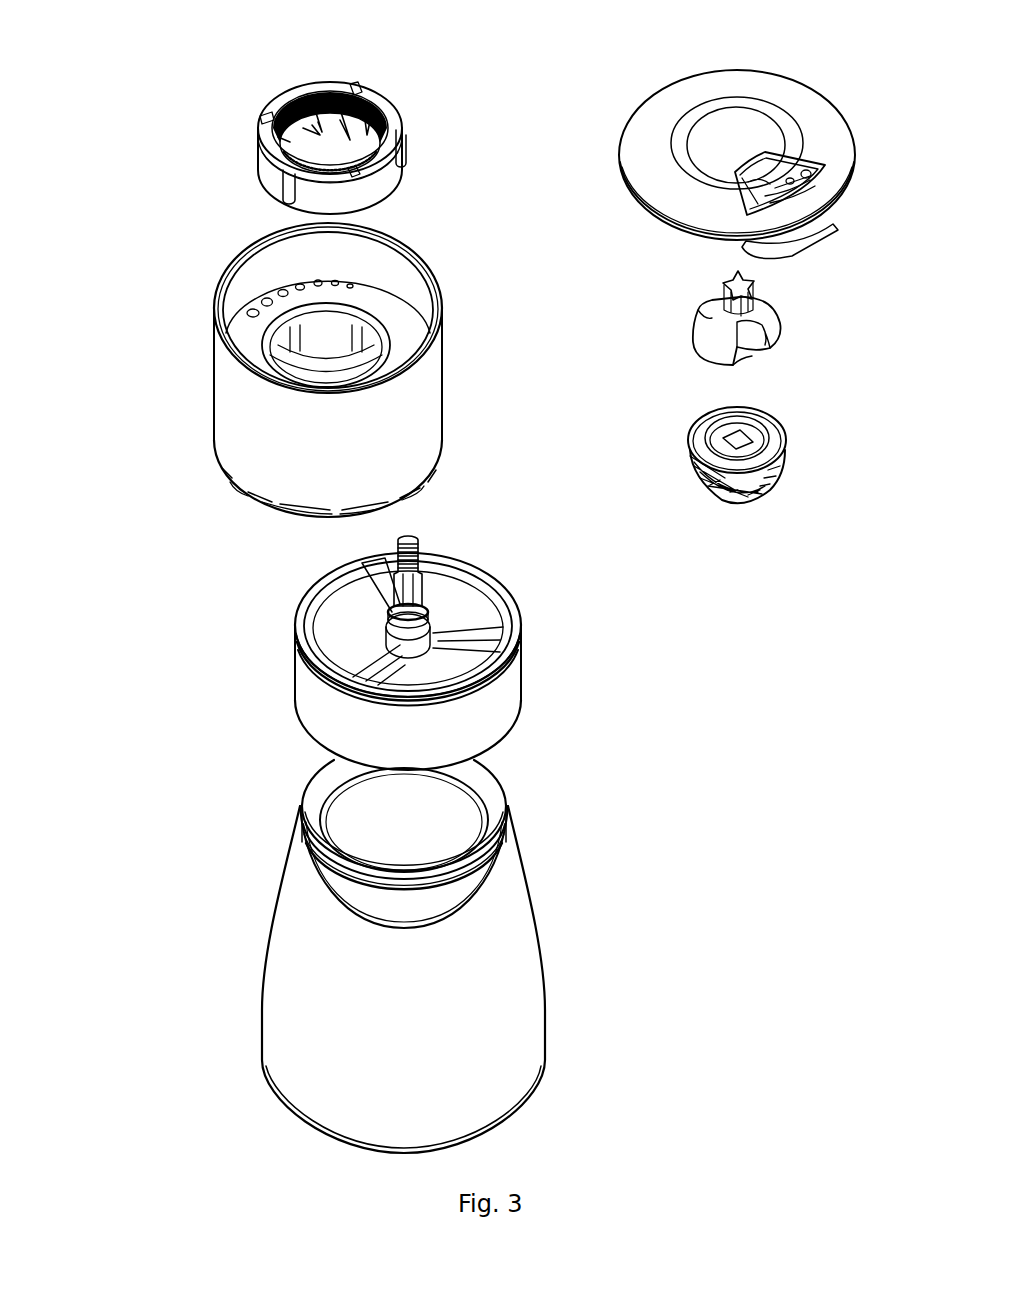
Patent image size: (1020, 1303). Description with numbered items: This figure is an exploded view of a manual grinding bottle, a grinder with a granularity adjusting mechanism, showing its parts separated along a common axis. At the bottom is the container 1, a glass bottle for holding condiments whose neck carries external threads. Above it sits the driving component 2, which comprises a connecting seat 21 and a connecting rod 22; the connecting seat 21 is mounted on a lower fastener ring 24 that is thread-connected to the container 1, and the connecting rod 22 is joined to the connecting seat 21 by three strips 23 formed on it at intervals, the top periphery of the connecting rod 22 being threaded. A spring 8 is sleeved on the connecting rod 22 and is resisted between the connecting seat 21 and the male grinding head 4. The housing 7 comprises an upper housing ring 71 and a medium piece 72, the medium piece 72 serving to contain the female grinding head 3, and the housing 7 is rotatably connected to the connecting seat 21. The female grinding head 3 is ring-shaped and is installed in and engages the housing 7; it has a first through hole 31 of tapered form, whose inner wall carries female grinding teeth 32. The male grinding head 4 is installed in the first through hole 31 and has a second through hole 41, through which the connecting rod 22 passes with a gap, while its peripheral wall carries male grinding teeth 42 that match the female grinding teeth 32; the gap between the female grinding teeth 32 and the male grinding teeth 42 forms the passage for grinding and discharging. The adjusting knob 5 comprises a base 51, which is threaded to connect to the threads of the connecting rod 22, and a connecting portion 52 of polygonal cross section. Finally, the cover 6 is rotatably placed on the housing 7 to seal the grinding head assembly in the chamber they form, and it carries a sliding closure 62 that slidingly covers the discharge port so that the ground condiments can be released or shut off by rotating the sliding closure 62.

The container 1 is at (502, 992).
The driving component 2 is at (425, 634).
The connecting seat 21 is at (523, 632).
The connecting rod 22 is at (408, 583).
The strips 23 is at (472, 640).
The lower fastener ring 24 is at (507, 699).
The female grinding head 3 is at (259, 107).
The first through hole 31 is at (333, 143).
The female grinding teeth 32 is at (295, 100).
The male grinding head 4 is at (787, 447).
The second through hole 41 is at (736, 445).
The male grinding teeth 42 is at (763, 473).
The adjusting knob 5 is at (735, 315).
The base 51 is at (767, 330).
The connecting portion 52 is at (755, 293).
The cover 6 is at (717, 164).
The sliding closure 62 is at (800, 157).
The housing 7 is at (236, 370).
The upper housing ring 71 is at (230, 400).
The medium piece 72 is at (243, 330).
The spring 8 is at (388, 593).